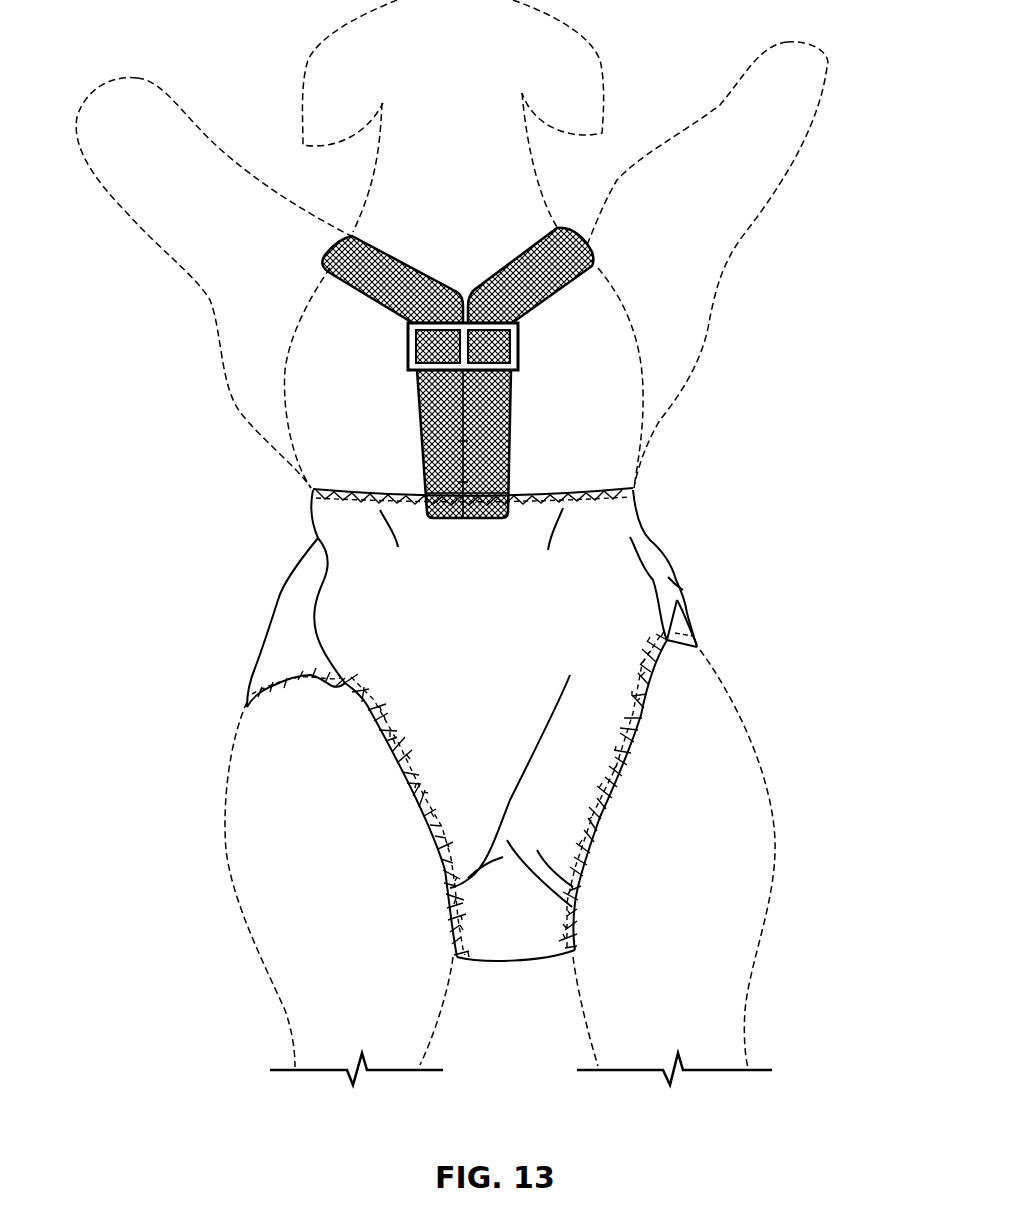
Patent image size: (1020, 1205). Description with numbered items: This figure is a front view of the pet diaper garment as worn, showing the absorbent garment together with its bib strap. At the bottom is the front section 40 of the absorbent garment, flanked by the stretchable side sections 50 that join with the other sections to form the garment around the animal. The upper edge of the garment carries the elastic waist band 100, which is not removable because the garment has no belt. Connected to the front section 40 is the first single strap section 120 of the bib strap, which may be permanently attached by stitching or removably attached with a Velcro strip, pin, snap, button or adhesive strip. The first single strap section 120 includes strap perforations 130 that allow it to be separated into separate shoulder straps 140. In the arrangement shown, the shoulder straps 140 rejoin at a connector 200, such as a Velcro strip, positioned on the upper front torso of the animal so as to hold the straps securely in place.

The front section 40 is at (494, 692).
The stretchable side sections 50 is at (285, 655).
The elastic waist band 100 is at (620, 475).
The first single strap section 120 is at (498, 460).
The strap perforations 130 is at (465, 457).
The shoulder straps 140 is at (360, 245).
The connector 200 is at (540, 345).